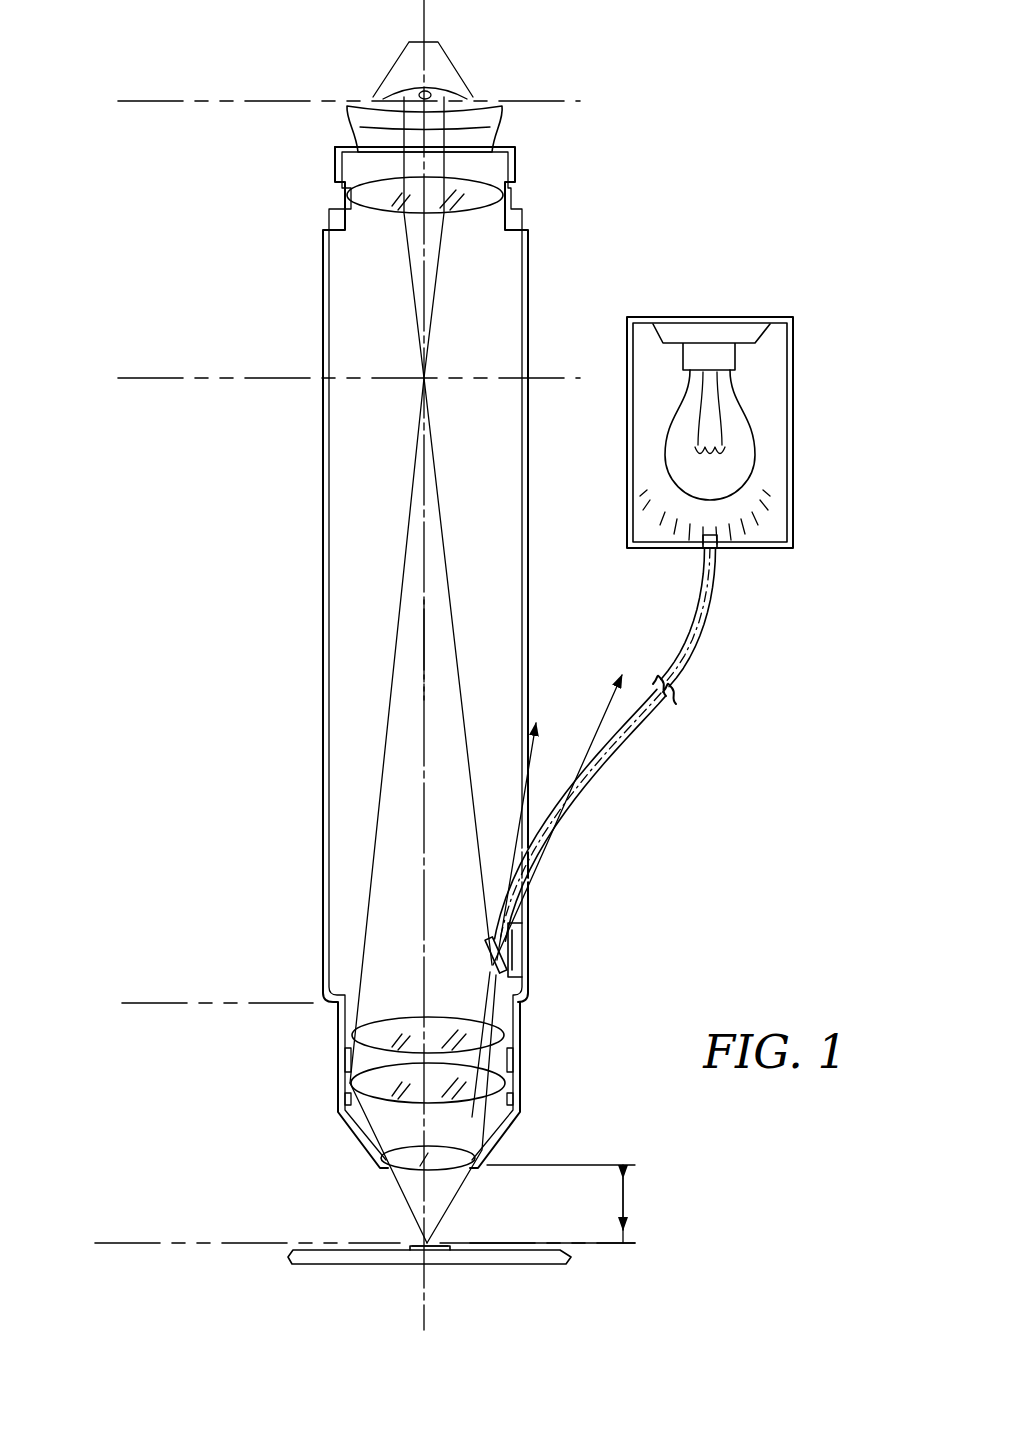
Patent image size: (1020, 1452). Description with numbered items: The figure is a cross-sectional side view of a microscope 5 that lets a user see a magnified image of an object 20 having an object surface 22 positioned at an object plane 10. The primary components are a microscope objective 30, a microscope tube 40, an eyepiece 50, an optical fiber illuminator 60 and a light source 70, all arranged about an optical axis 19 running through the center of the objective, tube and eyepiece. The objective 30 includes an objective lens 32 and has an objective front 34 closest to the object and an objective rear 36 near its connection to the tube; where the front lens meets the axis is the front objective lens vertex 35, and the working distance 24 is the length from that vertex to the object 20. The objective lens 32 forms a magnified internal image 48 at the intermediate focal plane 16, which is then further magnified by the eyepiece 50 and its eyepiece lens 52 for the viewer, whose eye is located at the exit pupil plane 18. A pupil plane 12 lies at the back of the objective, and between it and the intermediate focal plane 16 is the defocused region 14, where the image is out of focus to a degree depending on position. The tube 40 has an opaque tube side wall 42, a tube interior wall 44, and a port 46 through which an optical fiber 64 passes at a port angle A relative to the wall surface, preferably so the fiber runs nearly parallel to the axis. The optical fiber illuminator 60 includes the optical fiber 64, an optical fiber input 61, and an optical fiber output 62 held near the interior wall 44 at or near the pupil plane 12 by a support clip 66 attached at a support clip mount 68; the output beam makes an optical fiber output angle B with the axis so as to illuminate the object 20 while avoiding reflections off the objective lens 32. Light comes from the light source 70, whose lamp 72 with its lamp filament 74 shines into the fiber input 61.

The microscope 5 is at (252, 547).
The object plane 10 is at (116, 1243).
The pupil plane 12 is at (143, 1003).
The defocused region 14 is at (385, 518).
The intermediate focal plane 16 is at (138, 378).
The exit pupil plane 18 is at (138, 101).
The optical axis 19 is at (424, 1285).
The object 20 is at (408, 1242).
The object surface 22 is at (445, 1246).
The working distance 24 is at (624, 1210).
The microscope objective 30 is at (369, 1061).
The objective lens 32 is at (452, 1150).
The objective front 34 is at (437, 1180).
The front objective lens vertex 35 is at (422, 1170).
The objective rear 36 is at (388, 1030).
The microscope tube 40 is at (381, 657).
The tube side wall 42 is at (526, 604).
The tube interior wall 44 is at (512, 583).
The port 46 is at (526, 862).
The internal image 48 is at (482, 380).
The eyepiece 50 is at (513, 196).
The eyepiece lens 52 is at (370, 205).
The optical fiber illuminator 60 is at (426, 945).
The optical fiber input 61 is at (718, 532).
The optical fiber output 62 is at (487, 1000).
The optical fiber 64 is at (696, 652).
The support clip 66 is at (505, 950).
The support clip mount 68 is at (522, 935).
The light source 70 is at (711, 362).
The lamp 72 is at (757, 455).
The lamp filament 74 is at (692, 452).
The port angle A is at (532, 664).
The optical fiber output angle B is at (433, 726).